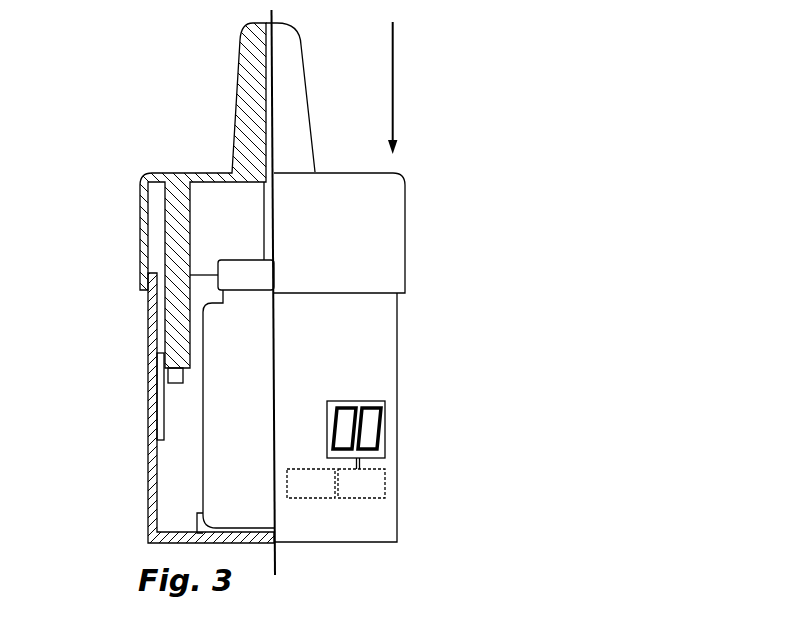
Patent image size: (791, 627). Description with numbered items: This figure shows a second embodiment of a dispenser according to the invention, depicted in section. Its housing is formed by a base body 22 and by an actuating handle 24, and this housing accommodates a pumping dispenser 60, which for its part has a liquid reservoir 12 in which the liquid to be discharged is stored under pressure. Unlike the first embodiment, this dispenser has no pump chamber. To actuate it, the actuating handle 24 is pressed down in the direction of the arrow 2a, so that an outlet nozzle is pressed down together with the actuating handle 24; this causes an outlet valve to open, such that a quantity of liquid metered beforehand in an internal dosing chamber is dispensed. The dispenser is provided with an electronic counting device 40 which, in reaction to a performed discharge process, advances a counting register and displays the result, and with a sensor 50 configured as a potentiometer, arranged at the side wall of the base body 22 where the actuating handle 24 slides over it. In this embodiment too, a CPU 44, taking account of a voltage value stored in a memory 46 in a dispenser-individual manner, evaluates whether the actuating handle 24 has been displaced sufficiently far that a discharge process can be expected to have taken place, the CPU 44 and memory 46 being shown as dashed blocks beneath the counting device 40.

The arrow 2a is at (392, 82).
The actuating handle 24 is at (148, 178).
The pumping dispenser 60 is at (201, 298).
The sensor 50 is at (151, 372).
The base body 22 is at (148, 463).
The liquid reservoir 12 is at (217, 475).
The counting device 40 is at (398, 412).
The CPU 44 is at (378, 482).
The memory 46 is at (317, 492).